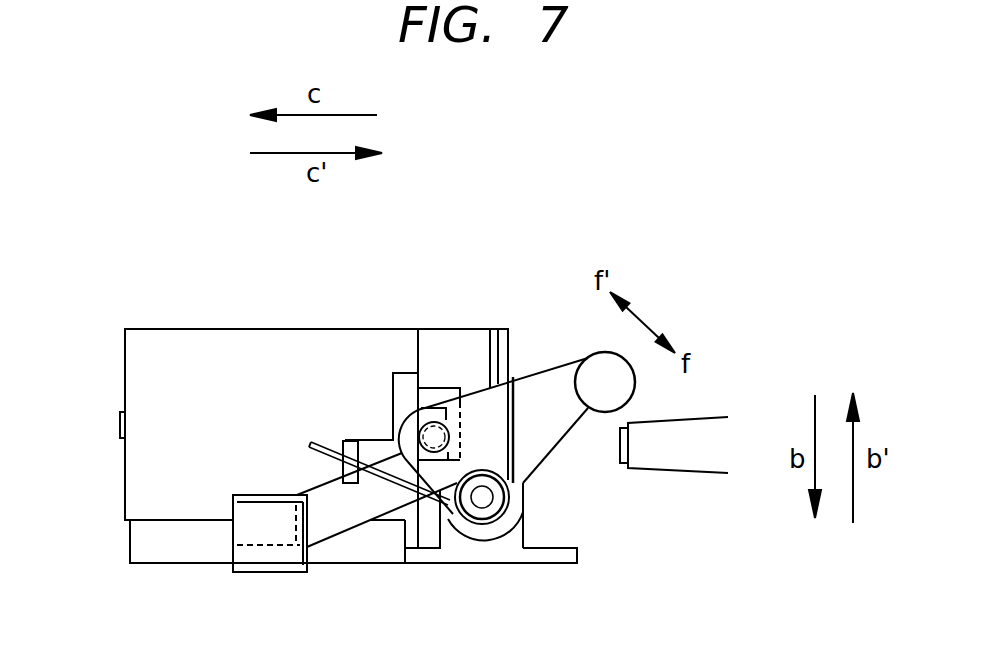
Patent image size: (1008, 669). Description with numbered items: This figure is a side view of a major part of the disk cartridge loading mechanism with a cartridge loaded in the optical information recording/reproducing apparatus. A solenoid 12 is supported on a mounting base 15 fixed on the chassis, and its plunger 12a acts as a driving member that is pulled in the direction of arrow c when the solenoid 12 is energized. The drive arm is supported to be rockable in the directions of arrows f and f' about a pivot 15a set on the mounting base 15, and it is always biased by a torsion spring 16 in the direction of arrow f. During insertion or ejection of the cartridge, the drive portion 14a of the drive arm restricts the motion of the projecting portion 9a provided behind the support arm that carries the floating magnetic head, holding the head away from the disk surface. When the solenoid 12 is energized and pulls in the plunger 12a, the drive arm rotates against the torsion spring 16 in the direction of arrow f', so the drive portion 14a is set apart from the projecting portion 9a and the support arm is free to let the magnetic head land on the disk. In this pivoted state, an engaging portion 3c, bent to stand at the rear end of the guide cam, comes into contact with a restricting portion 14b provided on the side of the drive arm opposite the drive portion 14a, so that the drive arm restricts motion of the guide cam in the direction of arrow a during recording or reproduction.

The solenoid 12 is at (184, 357).
The plunger 12a is at (435, 397).
The drive portion 14a is at (598, 365).
The restricting portion 14b is at (230, 500).
The mounting base 15 is at (368, 555).
The pivot 15a is at (487, 503).
The torsion spring 16 is at (522, 448).
The engaging portion 3c is at (252, 557).
The projecting portion 9a is at (695, 430).